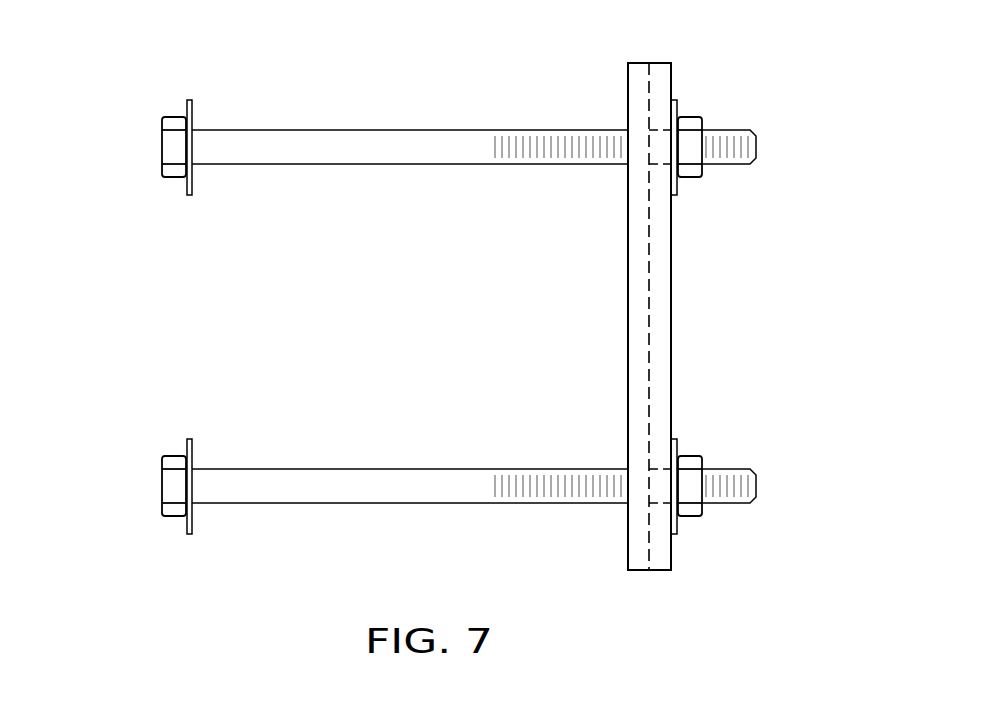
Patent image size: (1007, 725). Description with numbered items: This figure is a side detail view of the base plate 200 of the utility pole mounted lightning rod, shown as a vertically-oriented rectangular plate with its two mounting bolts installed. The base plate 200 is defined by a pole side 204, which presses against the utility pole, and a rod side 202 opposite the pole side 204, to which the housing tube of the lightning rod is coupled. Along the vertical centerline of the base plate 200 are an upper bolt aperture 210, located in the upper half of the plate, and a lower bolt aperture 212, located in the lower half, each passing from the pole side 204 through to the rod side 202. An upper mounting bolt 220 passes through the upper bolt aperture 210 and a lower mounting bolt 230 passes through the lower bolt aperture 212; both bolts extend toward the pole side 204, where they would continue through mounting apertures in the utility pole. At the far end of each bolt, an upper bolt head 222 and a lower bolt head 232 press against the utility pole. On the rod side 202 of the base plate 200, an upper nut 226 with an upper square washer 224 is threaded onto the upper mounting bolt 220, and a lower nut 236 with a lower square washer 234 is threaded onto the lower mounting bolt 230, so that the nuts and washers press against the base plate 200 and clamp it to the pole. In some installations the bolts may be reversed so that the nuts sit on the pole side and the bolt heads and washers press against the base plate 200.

The base plate 200 is at (660, 571).
The rod side 202 is at (735, 313).
The pole side 204 is at (555, 317).
The upper bolt aperture 210 is at (657, 140).
The lower bolt aperture 212 is at (657, 483).
The upper mounting bolt 220 is at (311, 135).
The upper bolt head 222 is at (173, 147).
The upper square washer 224 is at (675, 195).
The upper nut 226 is at (693, 172).
The lower mounting bolt 230 is at (318, 483).
The lower bolt head 232 is at (170, 483).
The lower square washer 234 is at (673, 535).
The lower nut 236 is at (692, 512).